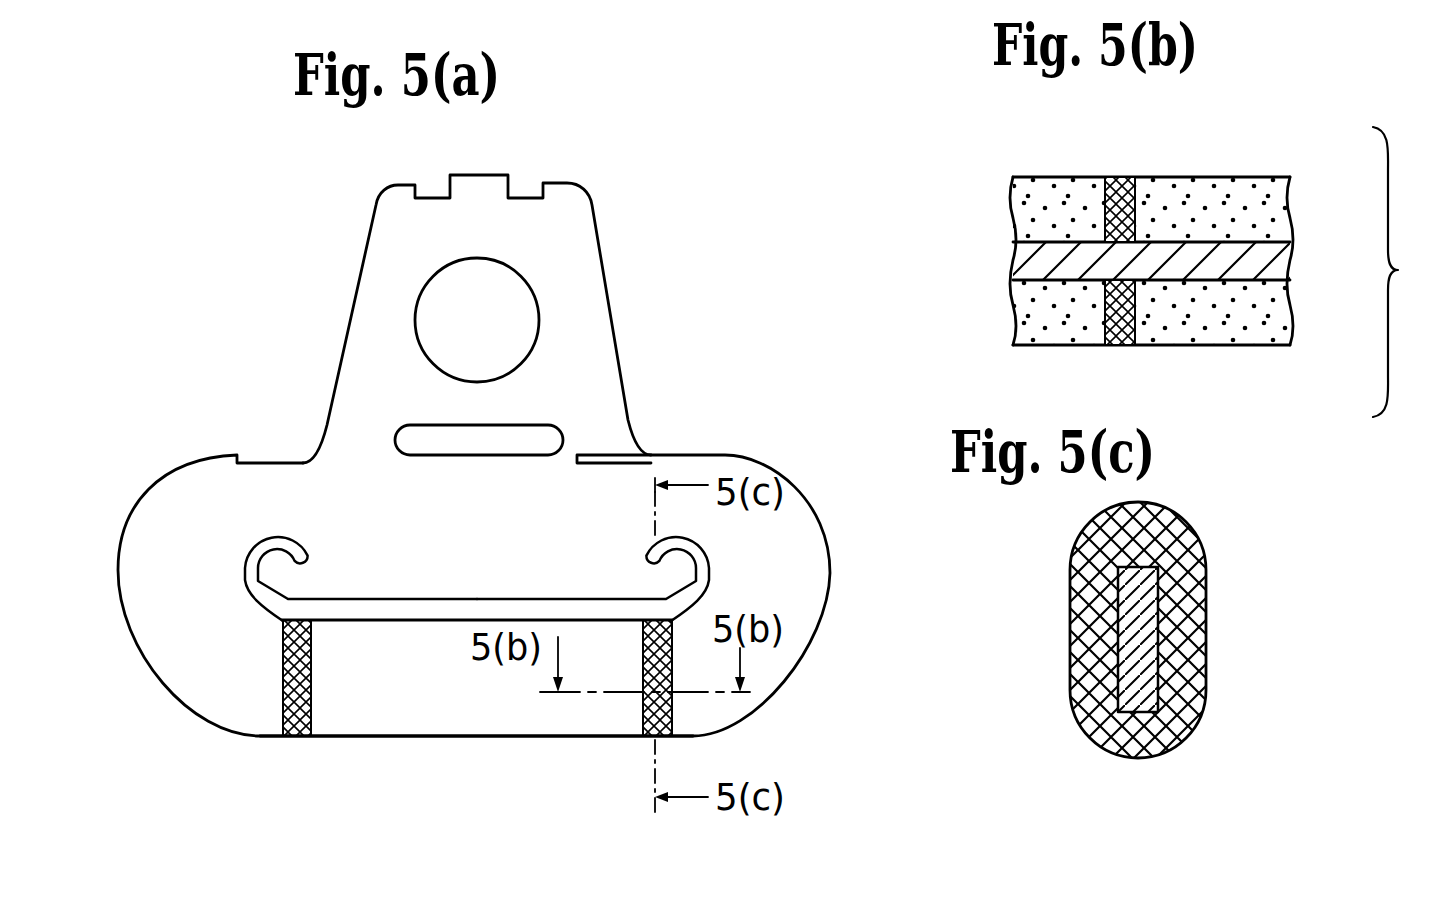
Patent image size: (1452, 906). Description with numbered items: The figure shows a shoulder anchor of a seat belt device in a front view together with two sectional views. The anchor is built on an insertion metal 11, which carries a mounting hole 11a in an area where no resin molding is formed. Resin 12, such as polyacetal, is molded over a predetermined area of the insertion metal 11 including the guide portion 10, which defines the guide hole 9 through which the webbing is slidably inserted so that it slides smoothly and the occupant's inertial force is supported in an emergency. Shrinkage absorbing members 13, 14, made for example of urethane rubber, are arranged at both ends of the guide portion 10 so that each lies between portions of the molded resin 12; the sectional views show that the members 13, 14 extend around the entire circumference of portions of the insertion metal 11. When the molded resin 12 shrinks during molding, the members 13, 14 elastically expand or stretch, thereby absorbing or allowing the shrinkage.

In FIG. 5A, the guide hole 9 is at (407, 603).
In FIG. 5A, the guide portion 10 is at (413, 710).
In FIG. 5B, the guide portion 10 is at (1405, 272).
In FIG. 5A, the insertion metal 11 is at (608, 410).
In FIG. 5B, the insertion metal 11 is at (1272, 258).
In FIG. 5C, the insertion metal 11 is at (1150, 668).
In FIG. 5A, the mounting hole 11a is at (512, 338).
In FIG. 5A, the resin 12 is at (197, 637).
In FIG. 5B, the resin 12 is at (1257, 217).
In FIG. 5A, the shrinkage absorbing member 13 is at (637, 703).
In FIG. 5B, the shrinkage absorbing member 13 is at (1122, 177).
In FIG. 5C, the shrinkage absorbing member 13 is at (1170, 578).
In FIG. 5A, the shrinkage absorbing member 14 is at (293, 737).